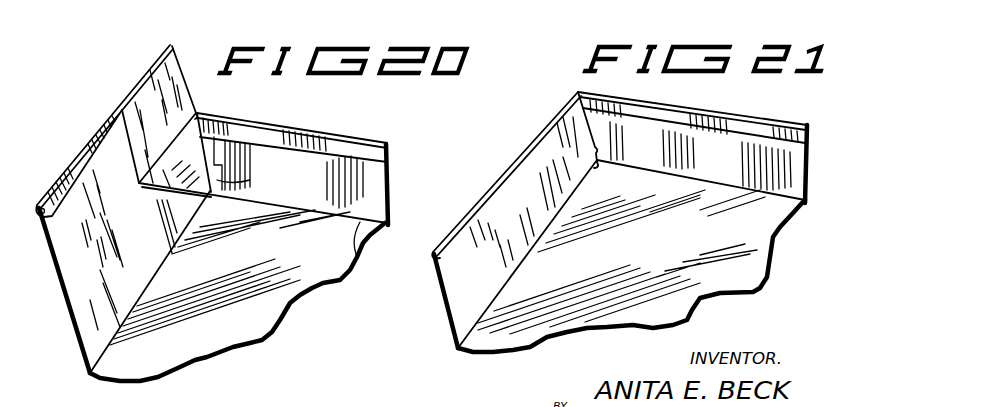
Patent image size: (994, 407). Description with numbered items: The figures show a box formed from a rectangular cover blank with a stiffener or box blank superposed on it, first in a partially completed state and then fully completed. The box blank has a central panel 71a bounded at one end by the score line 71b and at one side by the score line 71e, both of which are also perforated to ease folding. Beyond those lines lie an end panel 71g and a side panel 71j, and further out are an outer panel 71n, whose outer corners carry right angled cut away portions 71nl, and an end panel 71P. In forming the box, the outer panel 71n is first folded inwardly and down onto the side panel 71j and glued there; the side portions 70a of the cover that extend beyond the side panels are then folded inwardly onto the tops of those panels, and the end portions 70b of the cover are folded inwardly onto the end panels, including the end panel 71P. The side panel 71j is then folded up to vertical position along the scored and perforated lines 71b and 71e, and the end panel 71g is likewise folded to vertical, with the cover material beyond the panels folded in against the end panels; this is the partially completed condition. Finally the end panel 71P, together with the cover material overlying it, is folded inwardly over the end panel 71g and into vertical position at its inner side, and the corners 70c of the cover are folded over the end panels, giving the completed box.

In FIG. 20, the side portion of the cover 70a is at (326, 141).
In FIG. 20, the end portion of the cover 70b is at (73, 187).
In FIG. 20, the corner of the cover 70c is at (173, 67).
In FIG. 21, the corner of the cover 70c is at (600, 165).
In FIG. 20, the central panel 71a is at (277, 306).
In FIG. 21, the central panel 71a is at (686, 307).
In FIG. 20, the score line 71b is at (167, 258).
In FIG. 20, the score line 71e is at (361, 253).
In FIG. 20, the end panel 71g is at (97, 343).
In FIG. 21, the end panel 71g is at (440, 303).
In FIG. 20, the side panel 71j is at (393, 163).
In FIG. 20, the outer panel 71n is at (373, 186).
In FIG. 20, the cut away right angled portion 71nl is at (253, 163).
In FIG. 21, the cut away right angled portion 71nl is at (598, 144).
In FIG. 20, the end panel 71P is at (98, 182).
In FIG. 21, the end panel 71P is at (452, 280).